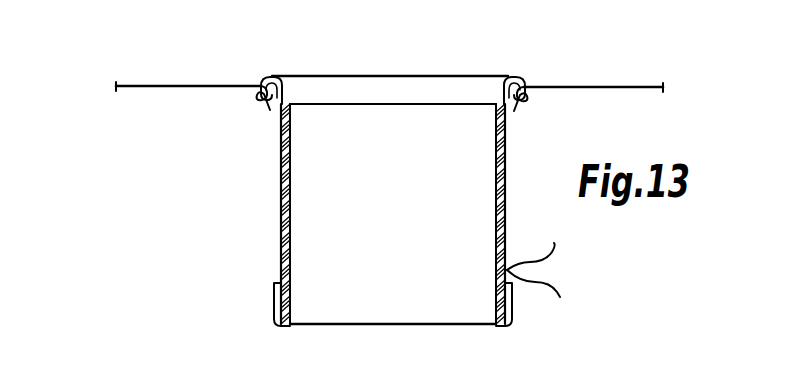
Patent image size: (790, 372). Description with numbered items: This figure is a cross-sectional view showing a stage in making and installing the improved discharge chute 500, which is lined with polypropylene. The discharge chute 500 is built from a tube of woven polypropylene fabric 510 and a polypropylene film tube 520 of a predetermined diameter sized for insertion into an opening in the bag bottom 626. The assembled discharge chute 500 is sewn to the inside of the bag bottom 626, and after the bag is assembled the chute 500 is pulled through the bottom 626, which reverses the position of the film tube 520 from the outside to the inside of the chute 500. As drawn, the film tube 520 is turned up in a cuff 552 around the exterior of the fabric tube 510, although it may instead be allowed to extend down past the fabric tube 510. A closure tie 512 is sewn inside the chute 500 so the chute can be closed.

The bag bottom 626 is at (573, 85).
The discharge chute 500 is at (281, 232).
The woven polypropylene fabric tube 510 is at (505, 165).
The polypropylene film tube 520 is at (408, 222).
The cuff 552 is at (266, 300).
The closure tie 512 is at (553, 262).